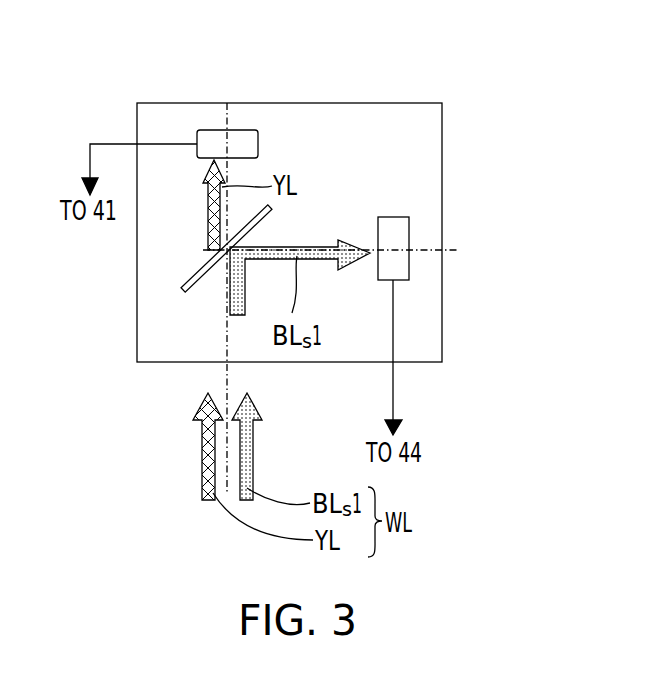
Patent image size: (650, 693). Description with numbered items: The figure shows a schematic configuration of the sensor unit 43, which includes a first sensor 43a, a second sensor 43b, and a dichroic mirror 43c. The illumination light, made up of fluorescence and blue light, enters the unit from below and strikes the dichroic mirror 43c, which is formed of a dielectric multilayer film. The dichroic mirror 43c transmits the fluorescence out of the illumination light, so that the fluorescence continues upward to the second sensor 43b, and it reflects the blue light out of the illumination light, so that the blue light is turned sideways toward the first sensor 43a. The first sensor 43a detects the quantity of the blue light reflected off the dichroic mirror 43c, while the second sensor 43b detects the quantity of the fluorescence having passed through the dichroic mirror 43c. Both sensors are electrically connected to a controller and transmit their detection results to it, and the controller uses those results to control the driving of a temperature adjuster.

The sensor unit 43 is at (442, 129).
The first sensor 43a is at (397, 270).
The second sensor 43b is at (242, 142).
The dichroic mirror 43c is at (192, 273).